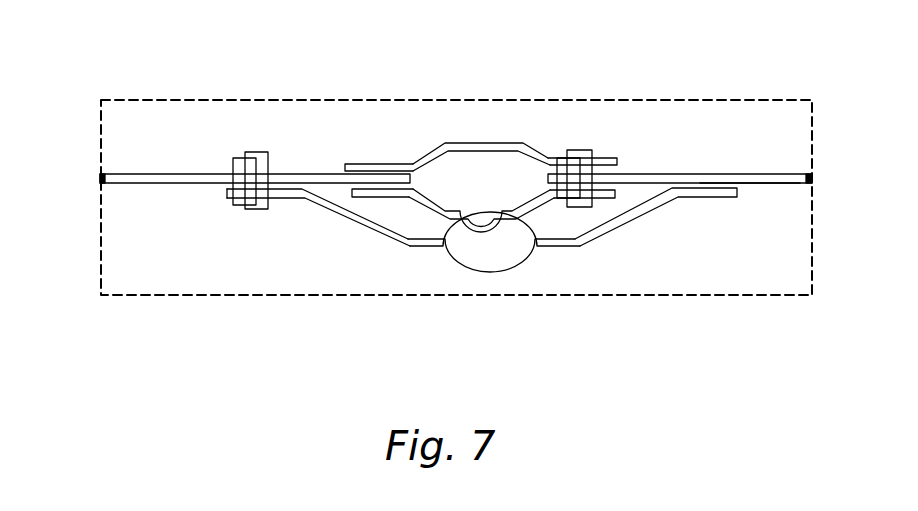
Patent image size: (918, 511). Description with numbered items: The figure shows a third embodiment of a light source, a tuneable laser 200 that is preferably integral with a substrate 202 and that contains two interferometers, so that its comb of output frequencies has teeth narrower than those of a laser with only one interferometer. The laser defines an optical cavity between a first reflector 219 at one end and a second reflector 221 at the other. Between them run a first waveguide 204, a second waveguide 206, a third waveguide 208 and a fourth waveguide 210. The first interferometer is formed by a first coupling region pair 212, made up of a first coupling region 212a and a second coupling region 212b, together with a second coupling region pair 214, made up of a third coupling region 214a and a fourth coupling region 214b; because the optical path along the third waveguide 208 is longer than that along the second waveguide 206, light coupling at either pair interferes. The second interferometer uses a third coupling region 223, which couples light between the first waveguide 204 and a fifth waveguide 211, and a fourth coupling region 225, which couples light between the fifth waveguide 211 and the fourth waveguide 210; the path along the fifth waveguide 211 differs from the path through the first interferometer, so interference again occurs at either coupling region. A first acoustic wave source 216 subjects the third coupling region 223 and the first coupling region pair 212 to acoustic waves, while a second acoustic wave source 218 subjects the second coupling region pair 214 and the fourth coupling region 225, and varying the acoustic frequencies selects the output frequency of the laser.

The tuneable laser 200 is at (454, 154).
The substrate 202 is at (658, 97).
The first waveguide 204 is at (219, 168).
The second waveguide 206 is at (478, 142).
The third waveguide 208 is at (442, 212).
The fourth waveguide 210 is at (714, 143).
The fifth waveguide 211 is at (599, 234).
The first coupling region pair 212 is at (377, 193).
The first coupling region 212a is at (342, 163).
The second coupling region 212b is at (350, 201).
The second coupling region pair 214 is at (624, 176).
The third coupling region 214a is at (624, 163).
The fourth coupling region 214b is at (621, 194).
The first acoustic wave source 216 is at (258, 151).
The second acoustic wave source 218 is at (584, 149).
The first reflector 219 is at (99, 180).
The second reflector 221 is at (814, 178).
The third coupling region 223 is at (284, 199).
The fourth coupling region 225 is at (748, 188).